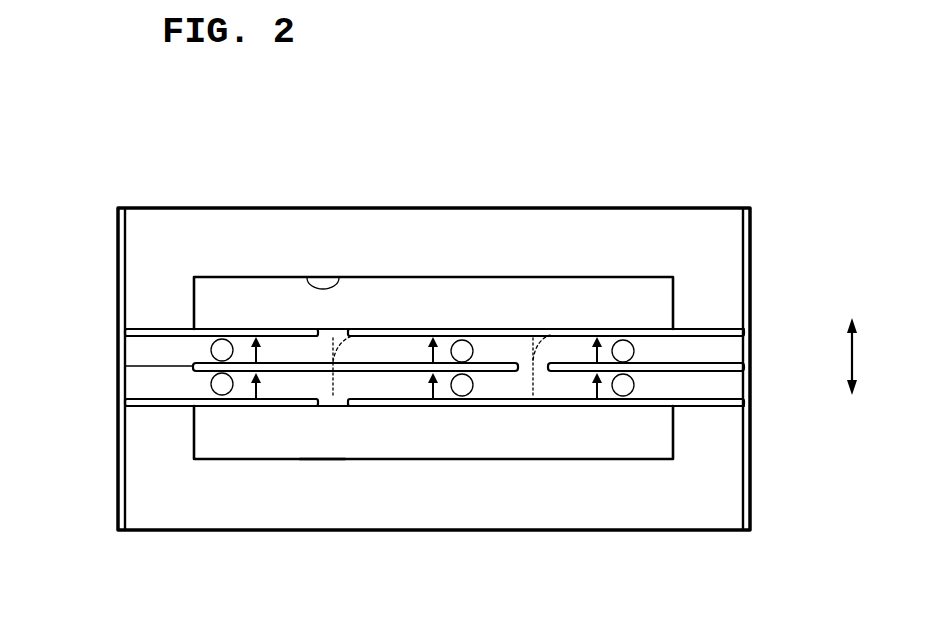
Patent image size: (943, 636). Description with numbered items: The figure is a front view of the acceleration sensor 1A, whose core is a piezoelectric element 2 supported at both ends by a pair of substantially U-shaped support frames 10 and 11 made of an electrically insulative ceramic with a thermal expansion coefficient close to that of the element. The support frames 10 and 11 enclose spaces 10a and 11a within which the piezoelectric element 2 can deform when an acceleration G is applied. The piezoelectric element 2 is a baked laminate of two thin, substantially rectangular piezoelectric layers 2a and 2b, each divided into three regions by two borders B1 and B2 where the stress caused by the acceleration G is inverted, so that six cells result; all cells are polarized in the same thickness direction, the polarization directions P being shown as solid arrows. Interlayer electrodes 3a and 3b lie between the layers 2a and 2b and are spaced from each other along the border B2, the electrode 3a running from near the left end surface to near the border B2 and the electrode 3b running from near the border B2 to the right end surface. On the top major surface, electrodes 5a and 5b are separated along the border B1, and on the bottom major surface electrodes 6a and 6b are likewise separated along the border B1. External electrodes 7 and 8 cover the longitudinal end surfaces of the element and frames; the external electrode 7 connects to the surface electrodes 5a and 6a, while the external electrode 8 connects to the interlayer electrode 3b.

The acceleration sensor 1A is at (668, 168).
The piezoelectric element 2 is at (38, 325).
The piezoelectric layer 2a is at (128, 347).
The piezoelectric layer 2b is at (132, 381).
The interlayer electrode 3a is at (392, 363).
The interlayer electrode 3b is at (722, 366).
The top major surface electrode 5a is at (157, 328).
The top major surface electrode 5b is at (502, 329).
The bottom major surface electrode 6a is at (158, 402).
The bottom major surface electrode 6b is at (512, 408).
The external electrode 7 is at (117, 237).
The external electrode 8 is at (752, 255).
The support frame 10 is at (442, 226).
The space 10a is at (308, 272).
The support frame 11 is at (436, 512).
The space 11a is at (303, 452).
The border B1 is at (356, 329).
The border B2 is at (552, 330).
The polarization direction P is at (258, 352).
The acceleration G is at (868, 356).